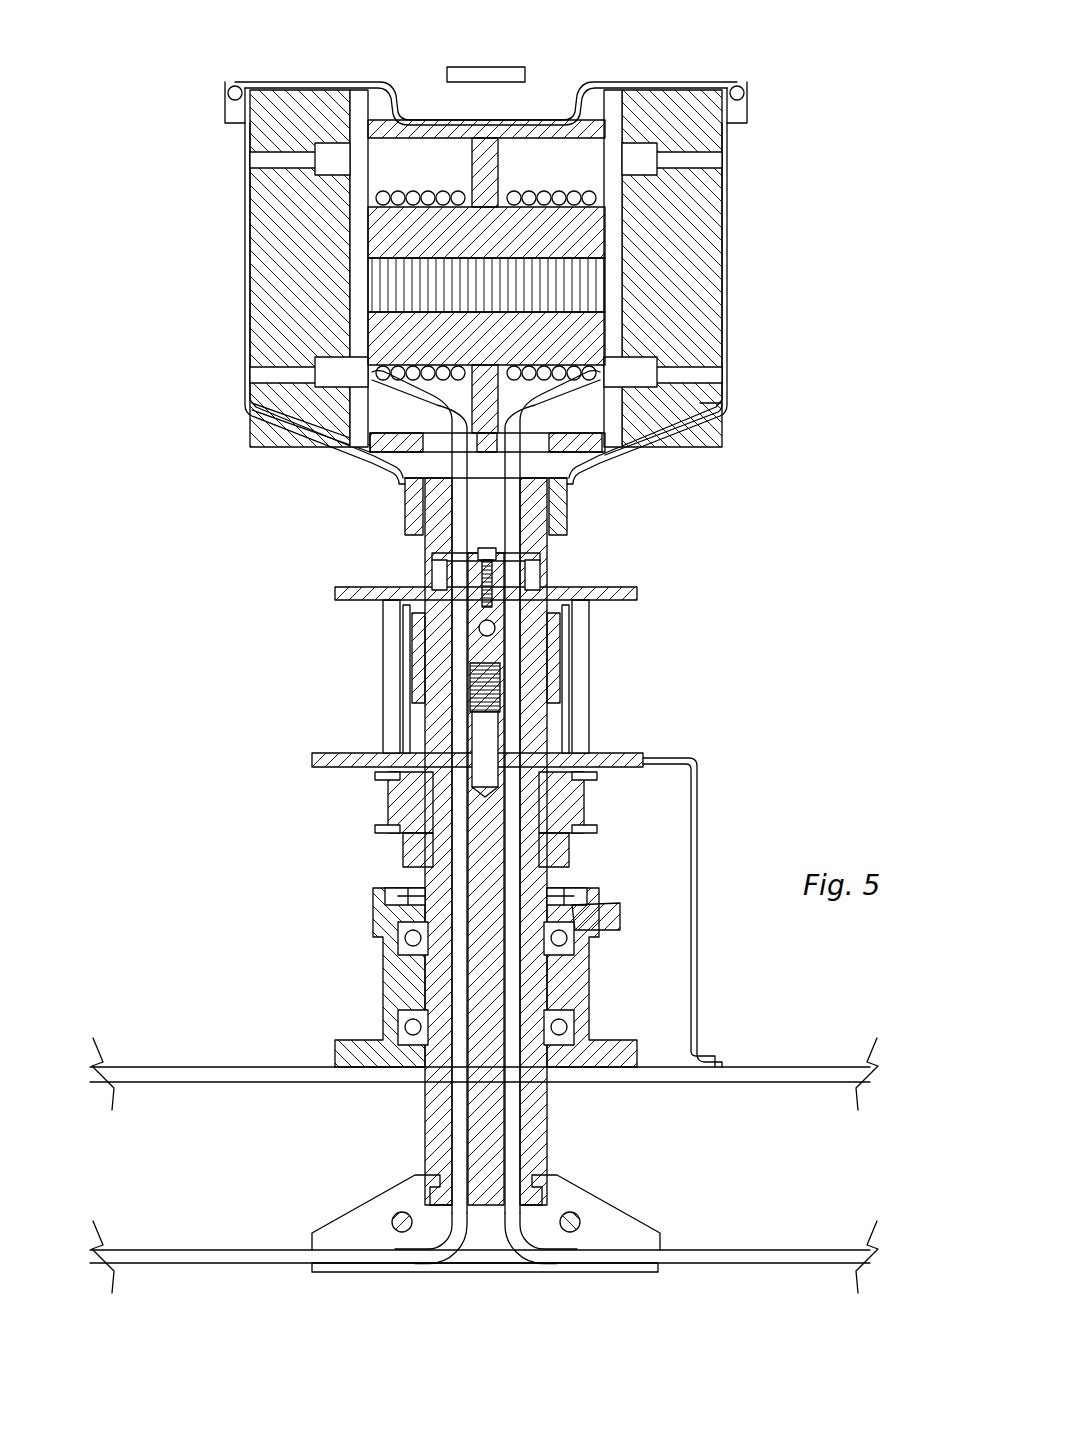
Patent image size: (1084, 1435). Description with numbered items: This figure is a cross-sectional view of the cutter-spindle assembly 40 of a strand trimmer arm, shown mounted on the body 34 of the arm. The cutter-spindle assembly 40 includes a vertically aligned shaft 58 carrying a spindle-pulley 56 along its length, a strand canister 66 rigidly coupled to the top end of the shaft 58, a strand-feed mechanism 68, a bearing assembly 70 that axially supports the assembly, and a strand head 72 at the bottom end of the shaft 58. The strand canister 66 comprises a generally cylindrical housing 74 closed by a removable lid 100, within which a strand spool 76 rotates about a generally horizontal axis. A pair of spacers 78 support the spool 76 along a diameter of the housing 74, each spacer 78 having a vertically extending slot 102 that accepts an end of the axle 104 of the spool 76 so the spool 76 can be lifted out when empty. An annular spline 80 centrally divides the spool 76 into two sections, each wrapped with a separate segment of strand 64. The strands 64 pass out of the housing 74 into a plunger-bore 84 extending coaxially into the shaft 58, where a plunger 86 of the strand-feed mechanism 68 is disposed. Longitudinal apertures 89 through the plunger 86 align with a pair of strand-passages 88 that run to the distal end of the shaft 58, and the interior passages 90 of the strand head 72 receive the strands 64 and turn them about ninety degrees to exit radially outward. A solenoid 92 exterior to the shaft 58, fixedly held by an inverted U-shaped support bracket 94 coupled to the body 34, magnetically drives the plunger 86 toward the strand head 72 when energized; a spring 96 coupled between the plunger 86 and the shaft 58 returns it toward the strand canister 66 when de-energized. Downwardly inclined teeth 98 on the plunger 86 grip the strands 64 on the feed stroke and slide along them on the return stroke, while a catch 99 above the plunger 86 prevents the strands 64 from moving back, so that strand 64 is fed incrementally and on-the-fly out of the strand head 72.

The body 34 is at (795, 1065).
The cutter-spindle assembly 40 is at (96, 99).
The spindle-pulley 56 is at (575, 808).
The shaft 58 is at (545, 805).
The strand 64 is at (428, 196).
The strand canister 66 is at (737, 266).
The strand-feed mechanism 68 is at (211, 620).
The bearing assembly 70 is at (373, 986).
The strand head 72 is at (625, 1222).
The housing 74 is at (727, 333).
The strand spool 76 is at (620, 228).
The spacers 78 is at (265, 333).
The annular spline 80 is at (508, 152).
The plunger-bore 84 is at (430, 788).
The plunger 86 is at (447, 637).
The strand-passages 88 is at (447, 880).
The longitudinal apertures 89 is at (507, 657).
The interior passages 90 is at (457, 1247).
The solenoid 92 is at (413, 622).
The support bracket 94 is at (688, 757).
The spring 96 is at (500, 703).
The teeth 98 is at (463, 587).
The catch 99 is at (467, 573).
The lid 100 is at (283, 82).
The slot 102 is at (357, 200).
The axle 104 is at (350, 278).